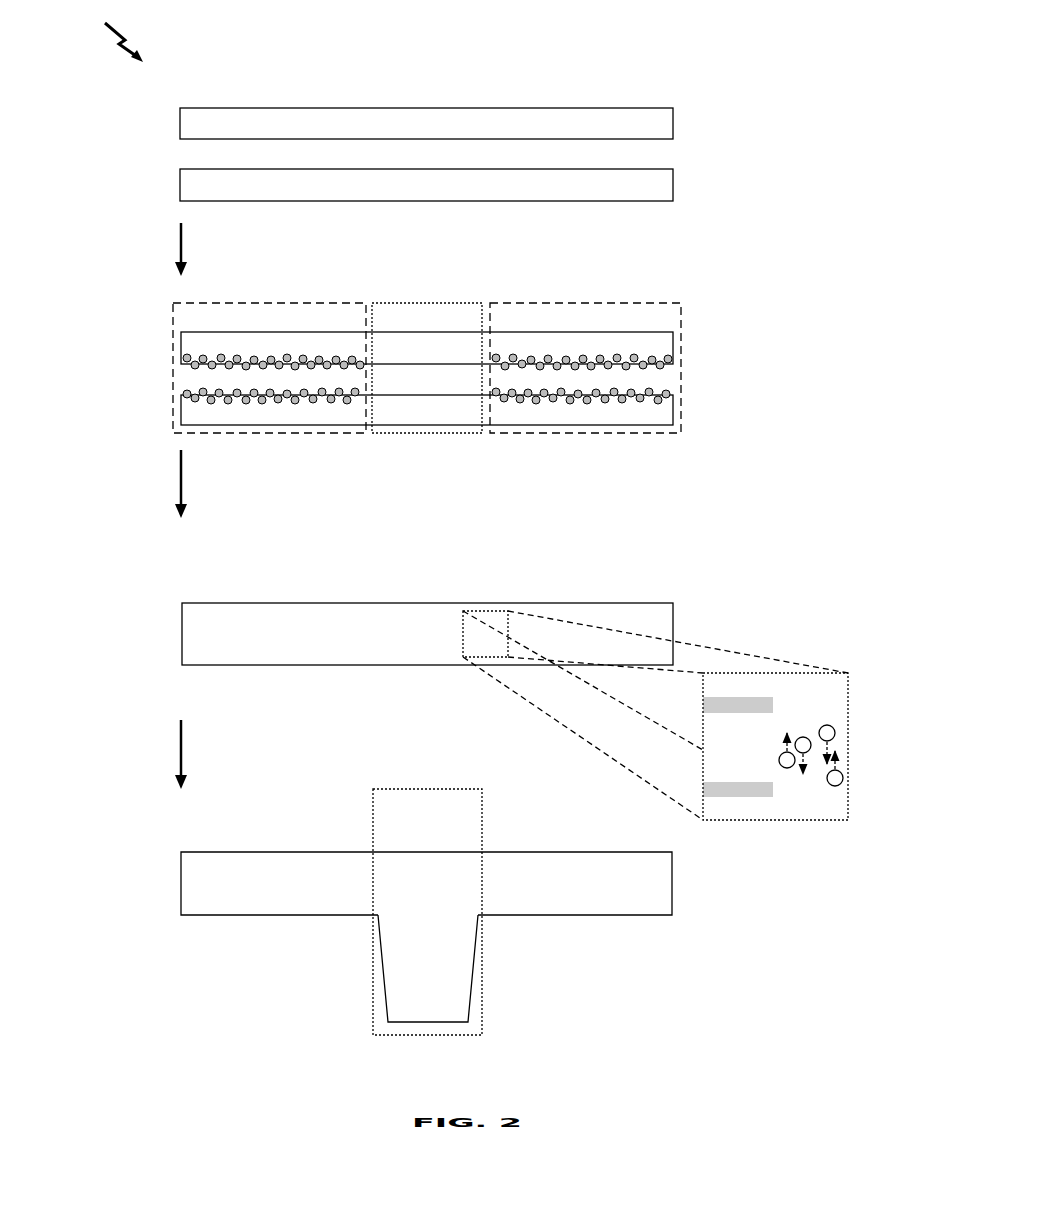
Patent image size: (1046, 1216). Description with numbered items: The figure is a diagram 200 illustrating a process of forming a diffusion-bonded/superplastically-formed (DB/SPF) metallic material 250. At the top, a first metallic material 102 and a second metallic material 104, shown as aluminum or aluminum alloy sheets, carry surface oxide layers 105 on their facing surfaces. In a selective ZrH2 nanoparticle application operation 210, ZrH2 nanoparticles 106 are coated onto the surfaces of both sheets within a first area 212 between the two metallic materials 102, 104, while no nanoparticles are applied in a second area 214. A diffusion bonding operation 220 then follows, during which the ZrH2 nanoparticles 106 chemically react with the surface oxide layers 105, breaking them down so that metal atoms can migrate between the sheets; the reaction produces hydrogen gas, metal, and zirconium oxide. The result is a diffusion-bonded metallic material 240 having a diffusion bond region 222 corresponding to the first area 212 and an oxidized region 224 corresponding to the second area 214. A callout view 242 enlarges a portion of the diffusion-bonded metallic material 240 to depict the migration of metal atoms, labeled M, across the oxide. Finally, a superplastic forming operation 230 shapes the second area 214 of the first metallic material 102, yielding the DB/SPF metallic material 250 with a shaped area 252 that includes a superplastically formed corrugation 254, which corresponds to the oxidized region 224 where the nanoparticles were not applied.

The diagram 200 is at (123, 32).
The first metallic material 102 is at (519, 296).
The second metallic material 104 is at (519, 235).
The surface oxide layer 105 is at (180, 169).
The ZrH2 nanoparticles 106 is at (665, 379).
The selective ZrH2 nanoparticle application operation 210 is at (126, 254).
The first area 212 is at (563, 313).
The second area 214 is at (427, 368).
The diffusion bonding operation 220 is at (341, 484).
The diffusion bond region 222 is at (341, 629).
The oxidized region 224 is at (412, 639).
The superplastic forming operation 230 is at (126, 754).
The diffusion-bonded metallic material 240 is at (523, 634).
The callout view 242 is at (703, 683).
The diffusion-bonded/superplastically-formed (DB/SPF) metallic material 250 is at (520, 881).
The shaped area 252 is at (427, 912).
The superplastically formed corrugation 254 is at (481, 1016).